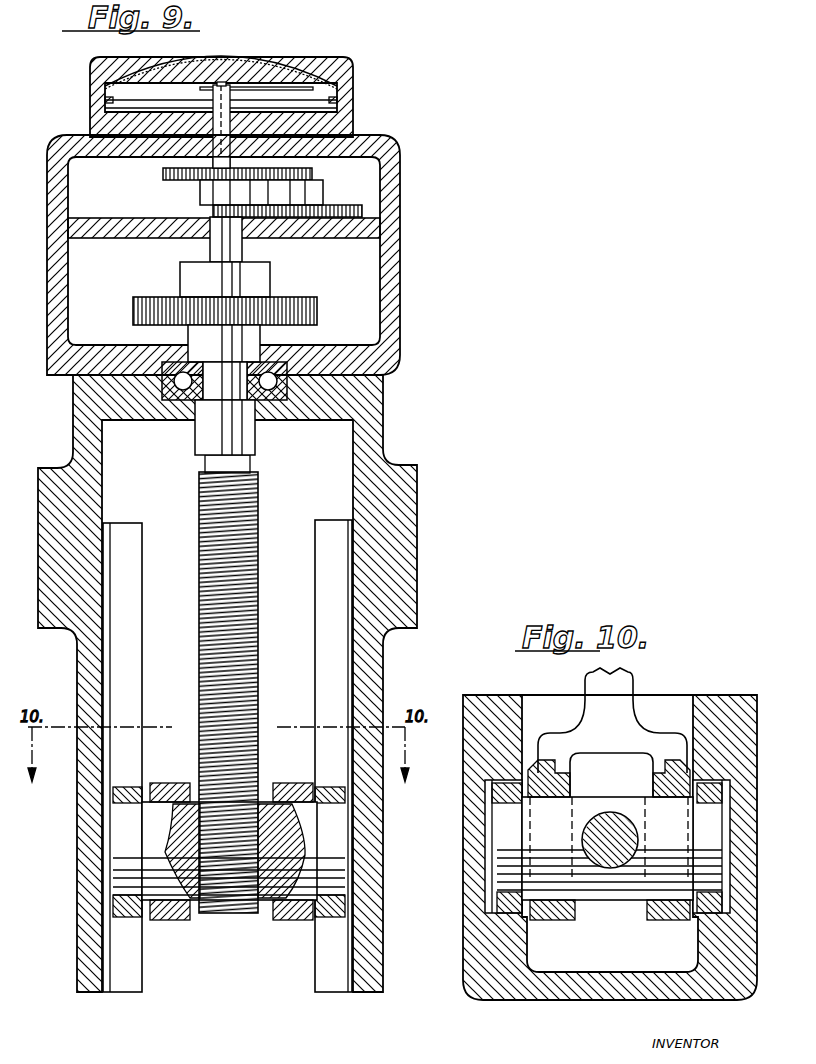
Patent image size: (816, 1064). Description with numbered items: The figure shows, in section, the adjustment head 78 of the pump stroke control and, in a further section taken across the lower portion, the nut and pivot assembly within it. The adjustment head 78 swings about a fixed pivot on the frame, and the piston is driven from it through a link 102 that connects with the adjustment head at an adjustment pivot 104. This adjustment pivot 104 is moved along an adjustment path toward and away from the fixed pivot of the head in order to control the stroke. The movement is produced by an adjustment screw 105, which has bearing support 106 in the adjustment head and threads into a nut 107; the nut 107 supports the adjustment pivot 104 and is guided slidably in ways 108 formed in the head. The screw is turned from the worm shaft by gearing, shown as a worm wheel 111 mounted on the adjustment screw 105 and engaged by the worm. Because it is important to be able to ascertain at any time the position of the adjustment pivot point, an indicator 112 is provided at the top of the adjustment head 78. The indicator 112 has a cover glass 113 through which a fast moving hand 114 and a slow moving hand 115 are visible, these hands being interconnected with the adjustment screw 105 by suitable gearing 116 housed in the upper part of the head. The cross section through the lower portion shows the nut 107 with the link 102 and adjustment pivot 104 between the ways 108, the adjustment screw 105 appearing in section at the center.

In FIG. 9, the adjustment head 78 is at (418, 556).
In FIG. 10, the adjustment head 78 is at (728, 694).
In FIG. 9, the link 102 is at (170, 785).
In FIG. 10, the link 102 is at (570, 786).
In FIG. 9, the adjustment pivot 104 is at (272, 901).
In FIG. 10, the adjustment pivot 104 is at (670, 874).
In FIG. 9, the adjustment screw 105 is at (258, 577).
In FIG. 10, the adjustment screw 105 is at (598, 838).
In FIG. 9, the bearing support 106 is at (268, 402).
In FIG. 9, the nut 107 is at (195, 906).
In FIG. 10, the nut 107 is at (638, 832).
In FIG. 9, the ways 108 is at (126, 536).
In FIG. 10, the ways 108 is at (505, 784).
In FIG. 9, the worm wheel 111 is at (310, 311).
In FIG. 9, the indicator 112 is at (353, 84).
In FIG. 9, the cover glass 113 is at (303, 68).
In FIG. 9, the fast moving hand 114 is at (262, 88).
In FIG. 9, the slow moving hand 115 is at (242, 96).
In FIG. 9, the gearing 116 is at (318, 213).